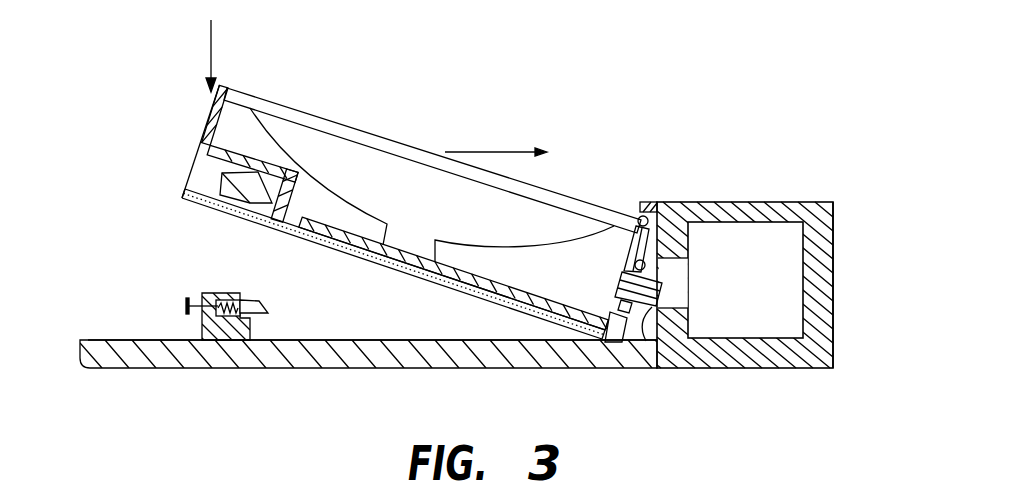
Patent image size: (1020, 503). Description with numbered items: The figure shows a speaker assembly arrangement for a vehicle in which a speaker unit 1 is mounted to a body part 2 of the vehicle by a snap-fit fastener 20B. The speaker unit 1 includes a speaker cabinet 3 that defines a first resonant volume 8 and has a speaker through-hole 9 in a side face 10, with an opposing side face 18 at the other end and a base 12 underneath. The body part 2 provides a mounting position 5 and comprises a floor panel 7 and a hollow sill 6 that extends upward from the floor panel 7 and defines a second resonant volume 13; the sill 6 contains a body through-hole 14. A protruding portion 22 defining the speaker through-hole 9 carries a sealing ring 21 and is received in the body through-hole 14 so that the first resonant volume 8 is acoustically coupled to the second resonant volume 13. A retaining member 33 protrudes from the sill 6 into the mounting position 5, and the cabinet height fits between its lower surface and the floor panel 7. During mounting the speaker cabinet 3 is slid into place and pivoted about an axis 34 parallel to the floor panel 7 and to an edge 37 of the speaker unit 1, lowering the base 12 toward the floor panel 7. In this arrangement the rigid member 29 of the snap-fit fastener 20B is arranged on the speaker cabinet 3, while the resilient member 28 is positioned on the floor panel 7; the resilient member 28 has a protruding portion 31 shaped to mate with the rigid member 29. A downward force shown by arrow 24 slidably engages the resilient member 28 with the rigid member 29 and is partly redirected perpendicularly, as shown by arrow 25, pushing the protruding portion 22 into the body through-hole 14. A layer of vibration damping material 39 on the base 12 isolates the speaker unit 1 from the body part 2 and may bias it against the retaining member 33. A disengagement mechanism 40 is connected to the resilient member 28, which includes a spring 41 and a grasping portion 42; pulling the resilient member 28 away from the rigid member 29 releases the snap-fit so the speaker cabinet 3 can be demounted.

The speaker unit 1 is at (312, 112).
The body part 2 is at (762, 237).
The speaker cabinet 3 is at (178, 138).
The mounting position 5 is at (461, 316).
The sill 6 is at (835, 237).
The floor panel 7 is at (388, 340).
The first resonant volume 8 is at (540, 278).
The speaker through-hole 9 is at (646, 211).
The side face 10 is at (622, 340).
The base 12 is at (370, 264).
The second resonant volume 13 is at (728, 238).
The body through-hole 14 is at (690, 267).
The side face 18 is at (213, 111).
The snap-fit fastener 20B is at (179, 285).
The sealing ring 21 is at (637, 348).
The protruding portion 22 is at (642, 347).
The arrow 24 is at (212, 50).
The arrow 25 is at (472, 152).
The resilient member 28 is at (262, 300).
The rigid member 29 is at (258, 213).
The protruding portion 31 is at (222, 180).
The retaining member 33 is at (646, 207).
The axis 34 is at (655, 214).
The edge 37 is at (638, 217).
The vibration damping material 39 is at (200, 205).
The disengagement mechanism 40 is at (199, 298).
The spring 41 is at (228, 301).
The grasping portion 42 is at (187, 309).